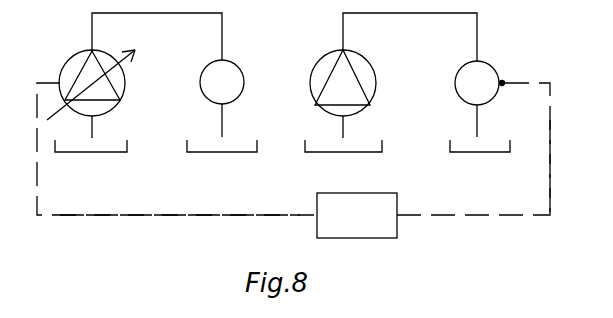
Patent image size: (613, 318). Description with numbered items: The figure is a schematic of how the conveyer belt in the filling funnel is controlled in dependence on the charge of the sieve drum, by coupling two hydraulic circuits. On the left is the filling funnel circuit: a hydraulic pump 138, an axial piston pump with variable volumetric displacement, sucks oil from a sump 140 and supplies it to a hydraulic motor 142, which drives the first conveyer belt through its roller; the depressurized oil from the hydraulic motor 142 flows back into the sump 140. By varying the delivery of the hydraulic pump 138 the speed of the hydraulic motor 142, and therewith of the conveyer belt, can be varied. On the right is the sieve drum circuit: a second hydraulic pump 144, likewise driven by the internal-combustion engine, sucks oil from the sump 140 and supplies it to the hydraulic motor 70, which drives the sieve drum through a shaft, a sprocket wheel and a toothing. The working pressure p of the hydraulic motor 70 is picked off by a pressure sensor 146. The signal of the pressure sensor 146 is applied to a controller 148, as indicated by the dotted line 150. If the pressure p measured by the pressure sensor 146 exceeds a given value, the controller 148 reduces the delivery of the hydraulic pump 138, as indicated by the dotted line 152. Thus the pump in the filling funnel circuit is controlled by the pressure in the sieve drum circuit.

The hydraulic pump 138 is at (120, 78).
The hydraulic motor 142 is at (240, 80).
The second hydraulic pump 144 is at (363, 75).
The hydraulic motor 70 is at (480, 73).
The pressure sensor 146 is at (503, 84).
The sump 140 is at (104, 146).
The controller 148 is at (375, 233).
The dotted line 150 is at (550, 190).
The dotted line 152 is at (123, 215).